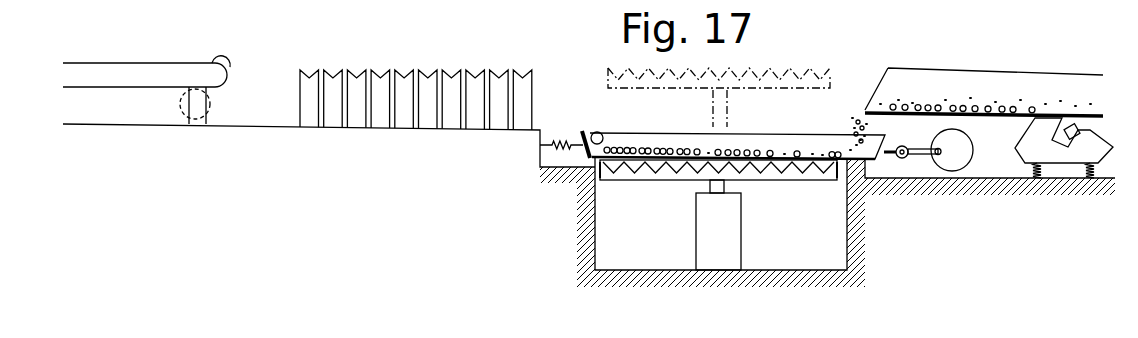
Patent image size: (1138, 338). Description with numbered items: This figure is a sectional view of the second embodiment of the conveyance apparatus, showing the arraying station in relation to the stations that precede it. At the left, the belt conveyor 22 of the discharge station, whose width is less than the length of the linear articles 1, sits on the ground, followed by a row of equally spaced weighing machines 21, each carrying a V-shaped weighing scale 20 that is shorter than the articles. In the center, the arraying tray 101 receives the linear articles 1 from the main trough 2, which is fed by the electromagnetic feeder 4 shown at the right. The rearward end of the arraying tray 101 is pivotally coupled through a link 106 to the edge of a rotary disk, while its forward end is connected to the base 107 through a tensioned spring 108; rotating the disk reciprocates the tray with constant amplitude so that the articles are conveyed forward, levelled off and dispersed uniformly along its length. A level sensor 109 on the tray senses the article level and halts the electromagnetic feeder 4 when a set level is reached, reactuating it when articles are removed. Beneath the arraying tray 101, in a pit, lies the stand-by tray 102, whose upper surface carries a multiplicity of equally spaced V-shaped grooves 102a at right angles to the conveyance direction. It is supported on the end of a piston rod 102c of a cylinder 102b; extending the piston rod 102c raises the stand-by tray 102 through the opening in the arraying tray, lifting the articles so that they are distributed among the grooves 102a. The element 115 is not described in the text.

The linear articles 1 is at (772, 150).
The main trough 2 is at (975, 75).
The electromagnetic feeder 4 is at (1067, 160).
The V-shaped weighing scale 20 is at (312, 76).
The weighing machines 21 is at (305, 125).
The belt conveyor 22 is at (123, 62).
The arraying tray 101 is at (639, 140).
The stand-by tray 102 is at (786, 77).
The V-shaped grooves 102a is at (658, 166).
The cylinder 102b is at (735, 252).
The piston rod 102c is at (710, 184).
The link 106 is at (919, 165).
The base 107 is at (540, 150).
The tensioned spring 108 is at (558, 132).
The level sensor 109 is at (595, 132).
The eccentric drive wheel 115 is at (956, 165).